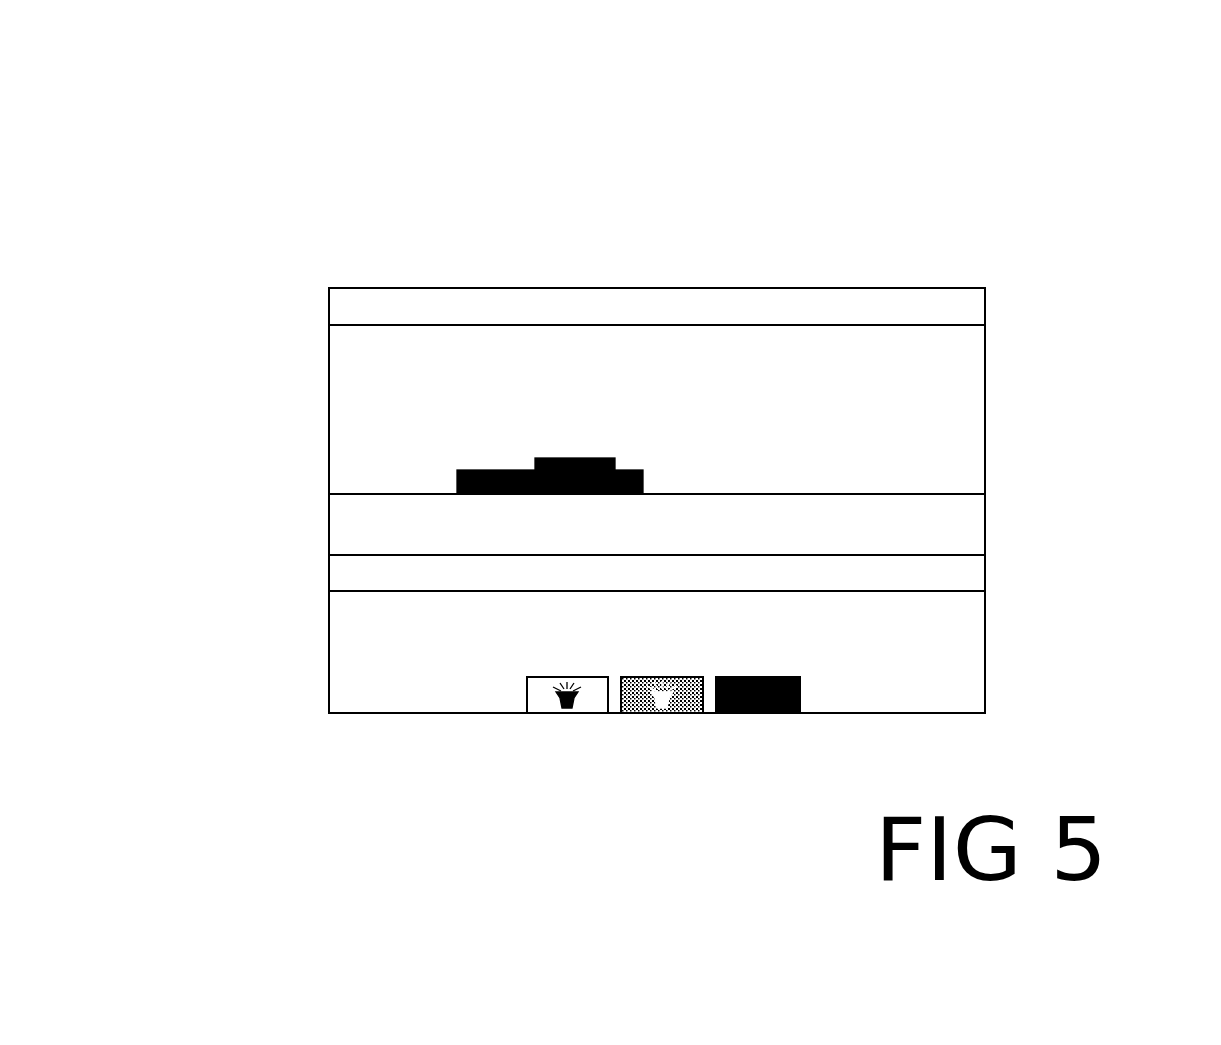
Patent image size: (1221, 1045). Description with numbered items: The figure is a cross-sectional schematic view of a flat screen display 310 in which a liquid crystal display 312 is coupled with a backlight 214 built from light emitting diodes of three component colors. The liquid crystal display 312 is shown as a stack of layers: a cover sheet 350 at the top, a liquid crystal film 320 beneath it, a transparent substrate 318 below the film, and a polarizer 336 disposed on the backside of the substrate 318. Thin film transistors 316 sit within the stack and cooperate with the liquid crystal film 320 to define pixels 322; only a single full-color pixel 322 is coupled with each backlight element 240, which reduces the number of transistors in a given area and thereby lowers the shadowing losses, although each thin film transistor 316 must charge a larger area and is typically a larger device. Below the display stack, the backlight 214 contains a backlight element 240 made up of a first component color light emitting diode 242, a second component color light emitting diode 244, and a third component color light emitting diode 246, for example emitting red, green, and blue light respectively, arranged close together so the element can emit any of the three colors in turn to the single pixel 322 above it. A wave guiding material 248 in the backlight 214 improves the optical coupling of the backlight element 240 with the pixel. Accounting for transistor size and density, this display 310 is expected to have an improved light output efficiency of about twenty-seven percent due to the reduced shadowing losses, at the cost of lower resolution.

The flat screen display 310 is at (1053, 246).
The liquid crystal display 312 is at (307, 288).
The backlight 214 is at (307, 591).
The cover sheet 350 is at (982, 303).
The liquid crystal film 320 is at (982, 425).
The pixel 322 is at (593, 418).
The thin film transistor 316 is at (620, 470).
The transparent substrate 318 is at (967, 524).
The polarizer 336 is at (973, 573).
The wave guiding material 248 is at (975, 660).
The backlight element 240 is at (817, 713).
The first component color light emitting diode 242 is at (545, 677).
The second component color light emitting diode 244 is at (667, 677).
The third component color light emitting diode 246 is at (775, 677).